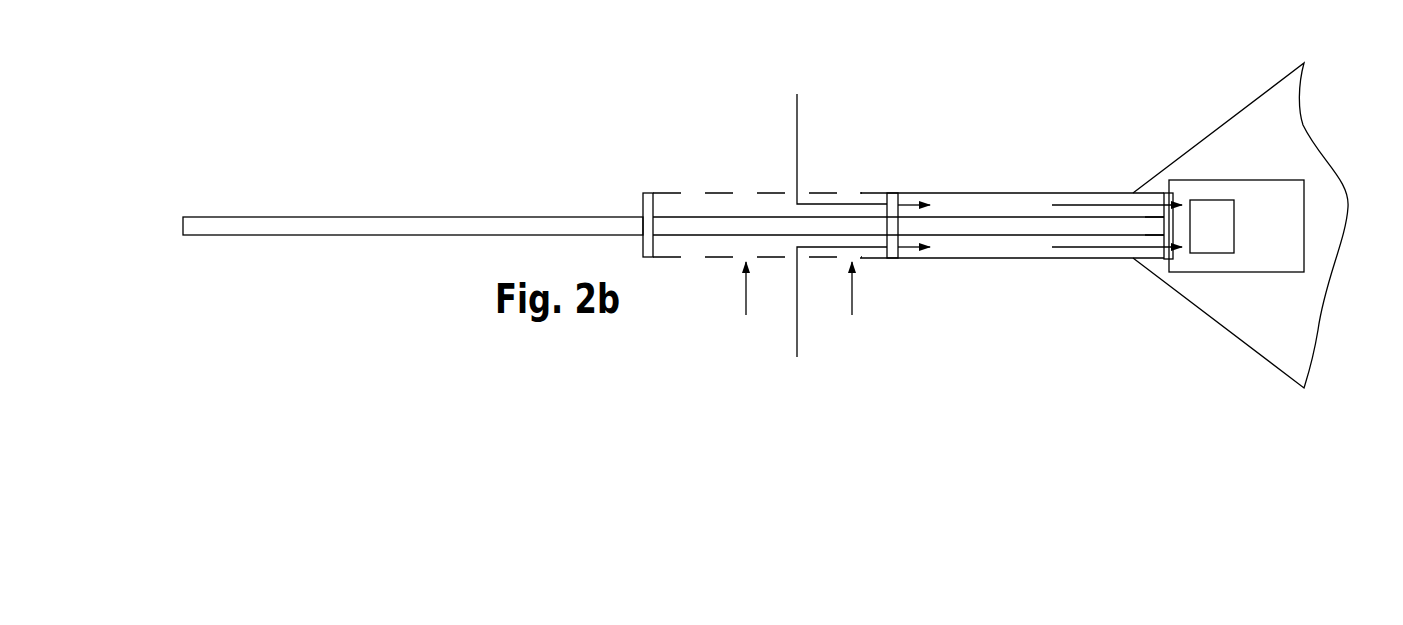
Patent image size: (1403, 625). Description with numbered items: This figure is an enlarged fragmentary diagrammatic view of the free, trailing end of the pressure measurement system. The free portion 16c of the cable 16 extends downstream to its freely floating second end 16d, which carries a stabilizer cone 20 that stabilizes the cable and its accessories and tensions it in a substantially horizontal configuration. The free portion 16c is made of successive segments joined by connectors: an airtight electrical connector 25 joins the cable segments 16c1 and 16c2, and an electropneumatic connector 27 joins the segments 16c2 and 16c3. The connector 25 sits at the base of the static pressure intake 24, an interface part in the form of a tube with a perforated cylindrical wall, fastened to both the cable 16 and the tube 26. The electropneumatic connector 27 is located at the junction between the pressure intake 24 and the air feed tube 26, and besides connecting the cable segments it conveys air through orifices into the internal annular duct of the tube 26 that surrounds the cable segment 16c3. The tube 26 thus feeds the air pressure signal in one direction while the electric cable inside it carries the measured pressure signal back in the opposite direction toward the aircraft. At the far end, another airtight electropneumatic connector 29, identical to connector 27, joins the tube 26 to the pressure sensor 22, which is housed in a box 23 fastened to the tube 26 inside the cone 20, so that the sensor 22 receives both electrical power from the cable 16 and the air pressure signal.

The cable 16 is at (968, 237).
The free portion of the cable 16c is at (442, 216).
The cable segment 16c1 is at (560, 223).
The cable segment 16c2 is at (740, 217).
The cable segment 16c3 is at (987, 217).
The second end of the cable 16d is at (1155, 227).
The stabilizer cone 20 is at (1250, 104).
The pressure sensor 22 is at (1212, 255).
The box 23 is at (1260, 274).
The static pressure intake 24 is at (671, 191).
The electrical connector 25 is at (641, 203).
The tube 26 is at (1036, 260).
The electropneumatic connector 27 is at (891, 193).
The electropneumatic connector 29 is at (1163, 192).